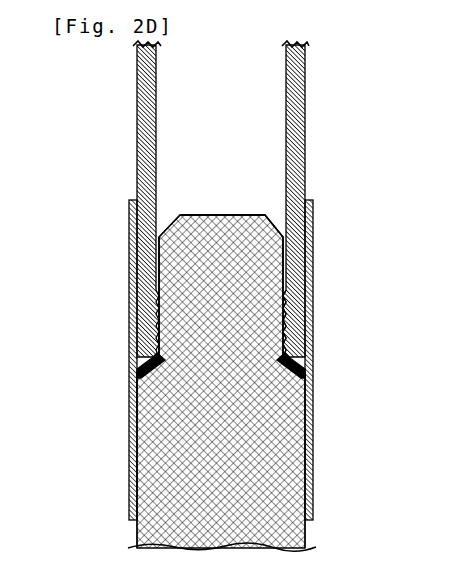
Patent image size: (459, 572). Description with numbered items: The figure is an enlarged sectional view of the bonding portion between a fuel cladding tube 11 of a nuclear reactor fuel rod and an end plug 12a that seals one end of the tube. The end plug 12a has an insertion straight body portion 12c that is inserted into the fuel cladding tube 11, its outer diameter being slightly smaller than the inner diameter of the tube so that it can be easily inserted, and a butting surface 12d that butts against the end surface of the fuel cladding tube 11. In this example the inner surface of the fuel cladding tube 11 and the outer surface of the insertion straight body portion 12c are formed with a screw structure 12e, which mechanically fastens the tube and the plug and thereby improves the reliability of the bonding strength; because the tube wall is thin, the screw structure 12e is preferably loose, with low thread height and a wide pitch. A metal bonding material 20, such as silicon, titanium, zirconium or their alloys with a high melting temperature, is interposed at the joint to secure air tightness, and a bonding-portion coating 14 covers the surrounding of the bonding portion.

The fuel cladding tube 11 is at (156, 97).
The end plug 12a is at (270, 521).
The insertion straight body portion 12c is at (190, 268).
The butting surface 12d is at (148, 382).
The screw structure 12e is at (311, 310).
The bonding-portion coating 14 is at (313, 445).
The metal bonding material 20 is at (311, 358).